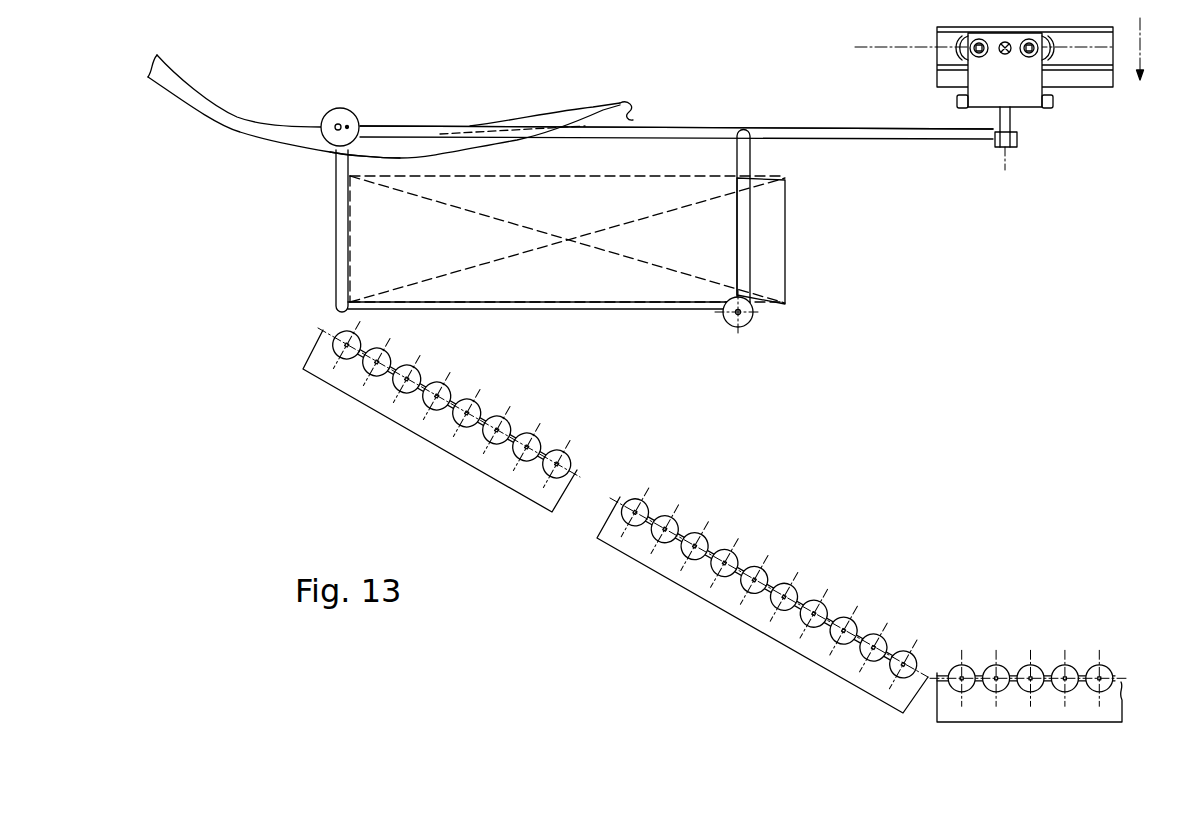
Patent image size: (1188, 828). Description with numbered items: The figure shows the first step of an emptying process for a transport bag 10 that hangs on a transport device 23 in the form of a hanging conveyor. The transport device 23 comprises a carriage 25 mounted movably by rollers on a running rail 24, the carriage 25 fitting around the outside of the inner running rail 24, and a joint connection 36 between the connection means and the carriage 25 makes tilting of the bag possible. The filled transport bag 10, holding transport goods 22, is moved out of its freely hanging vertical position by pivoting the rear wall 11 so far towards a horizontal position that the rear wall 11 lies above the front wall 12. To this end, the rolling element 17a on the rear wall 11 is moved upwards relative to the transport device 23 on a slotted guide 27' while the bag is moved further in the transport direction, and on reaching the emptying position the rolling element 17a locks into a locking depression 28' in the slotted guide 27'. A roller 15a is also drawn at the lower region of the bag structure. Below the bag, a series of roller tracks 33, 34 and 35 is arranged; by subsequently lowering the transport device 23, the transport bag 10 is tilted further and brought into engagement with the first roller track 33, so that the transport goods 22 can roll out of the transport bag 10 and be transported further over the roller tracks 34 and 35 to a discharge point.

The transport bag 10 is at (677, 113).
The rear wall 11 is at (712, 133).
The front wall 12 is at (682, 309).
The guide roller 15a is at (742, 318).
The rolling element 17a is at (348, 124).
The transport goods 22 is at (772, 249).
The transport device 23 is at (1077, 155).
The running rail 24 is at (1075, 80).
The carriage 25 is at (992, 81).
The slotted guide 27' is at (390, 104).
The locking depression 28' is at (309, 203).
The roller track 33 is at (466, 443).
The roller track 34 is at (730, 593).
The roller track 35 is at (1022, 705).
The joint connection 36 is at (1017, 152).